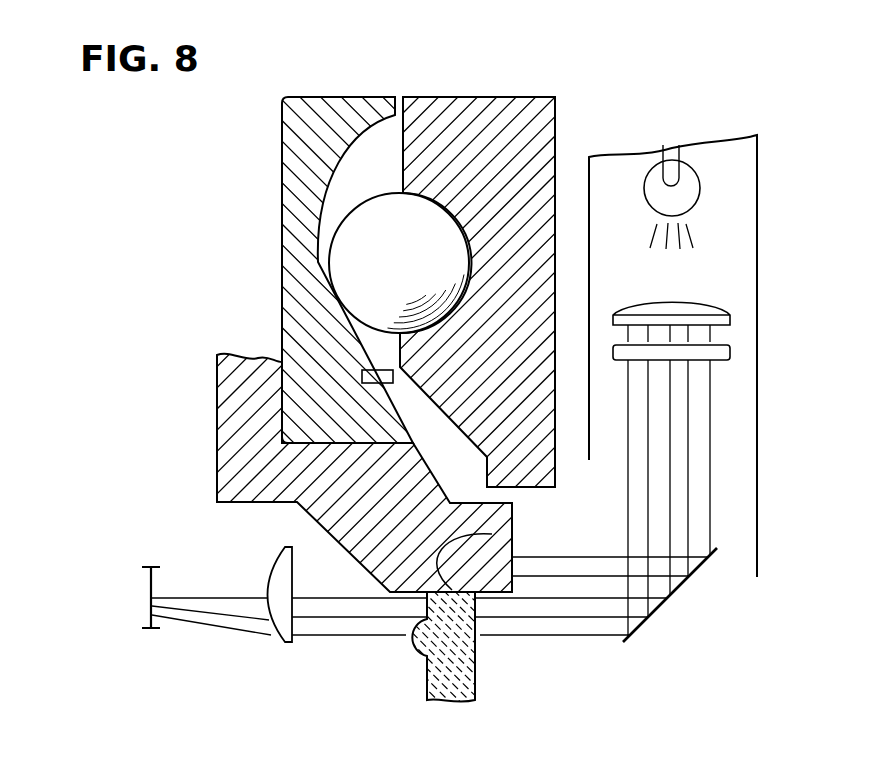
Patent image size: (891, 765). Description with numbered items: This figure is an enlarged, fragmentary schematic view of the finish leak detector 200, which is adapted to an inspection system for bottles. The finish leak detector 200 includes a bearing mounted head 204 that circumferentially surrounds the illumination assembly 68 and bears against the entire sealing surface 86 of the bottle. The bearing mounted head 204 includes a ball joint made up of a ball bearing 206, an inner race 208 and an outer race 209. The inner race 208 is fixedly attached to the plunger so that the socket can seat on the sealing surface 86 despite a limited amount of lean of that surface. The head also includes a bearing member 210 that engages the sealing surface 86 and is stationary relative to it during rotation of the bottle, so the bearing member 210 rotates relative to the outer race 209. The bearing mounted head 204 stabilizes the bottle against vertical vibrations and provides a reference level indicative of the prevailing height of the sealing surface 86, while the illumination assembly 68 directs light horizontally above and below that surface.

The finish leak detector 200 is at (212, 438).
The bearing mounted head 204 is at (500, 96).
The ball bearing 206 is at (381, 218).
The inner race 208 is at (530, 115).
The outer race 209 is at (285, 100).
The bearing member 210 is at (513, 515).
The sealing surface 86 is at (490, 535).
The illumination assembly 68 is at (758, 397).